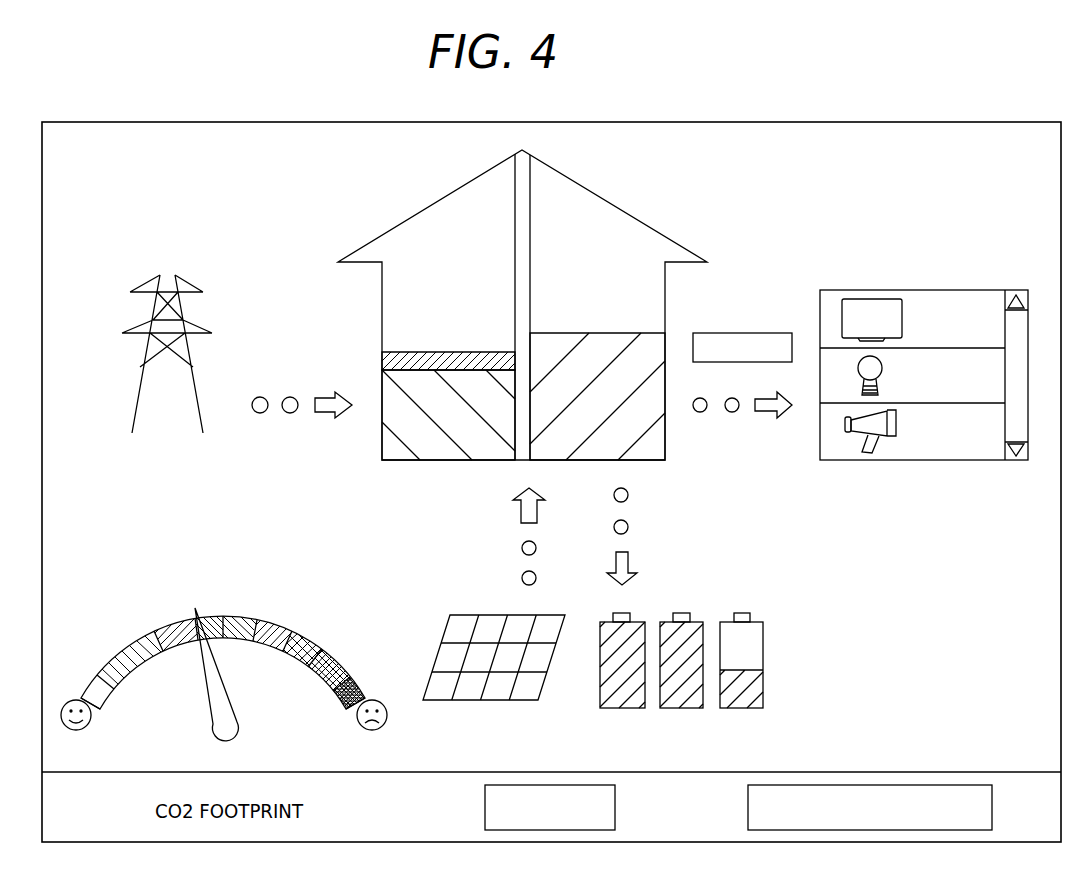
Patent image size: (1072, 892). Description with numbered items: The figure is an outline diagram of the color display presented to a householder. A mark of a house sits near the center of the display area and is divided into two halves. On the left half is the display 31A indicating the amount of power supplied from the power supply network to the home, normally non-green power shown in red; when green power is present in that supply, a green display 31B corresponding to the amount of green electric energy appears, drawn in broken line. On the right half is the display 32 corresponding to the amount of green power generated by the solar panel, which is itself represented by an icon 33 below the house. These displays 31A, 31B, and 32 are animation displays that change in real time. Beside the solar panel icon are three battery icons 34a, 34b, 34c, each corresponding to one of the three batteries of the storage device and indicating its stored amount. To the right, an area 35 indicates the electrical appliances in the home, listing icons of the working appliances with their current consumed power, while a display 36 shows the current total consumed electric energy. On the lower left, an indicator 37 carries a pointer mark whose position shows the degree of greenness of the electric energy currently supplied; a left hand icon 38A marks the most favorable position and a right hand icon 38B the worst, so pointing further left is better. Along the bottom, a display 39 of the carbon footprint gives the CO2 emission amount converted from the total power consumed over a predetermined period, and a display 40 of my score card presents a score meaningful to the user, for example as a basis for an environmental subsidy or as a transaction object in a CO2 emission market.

The display indicating amount of power supplied from the power supply network 31A is at (380, 437).
The display corresponding to amount of green electric energy 31B is at (382, 362).
The display corresponding to amount of green power generated by the solar panel 32 is at (662, 437).
The icon of the solar panel 33 is at (470, 613).
The battery icon 34a is at (620, 612).
The battery icon 34b is at (685, 612).
The battery icon 34c is at (746, 612).
The area indicating electrical appliances in the home 35 is at (898, 290).
The display indicating current total consumed electric energy 36 is at (736, 333).
The indicator 37 is at (147, 613).
The left hand icon 38A is at (72, 700).
The right hand icon 38B is at (376, 700).
The display of a carbon footprint 39 is at (485, 815).
The display of my score card 40 is at (748, 815).